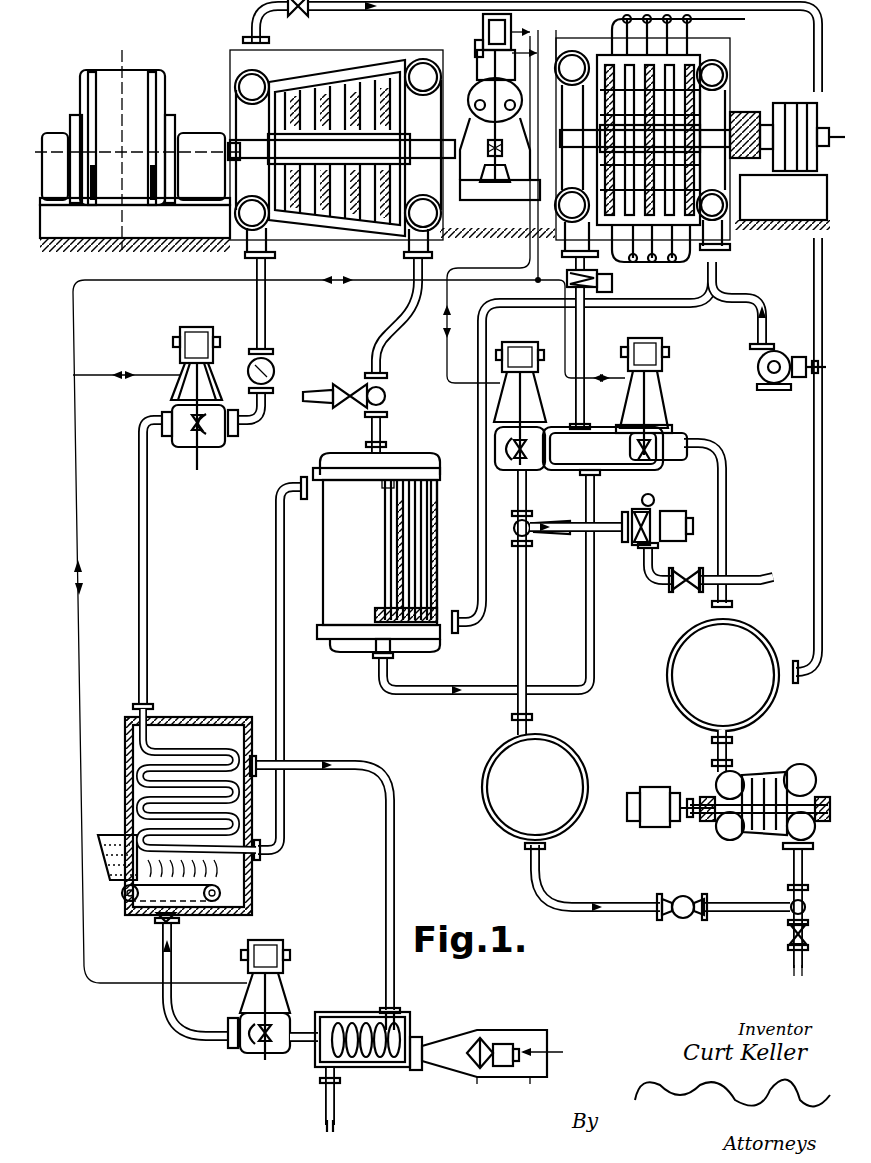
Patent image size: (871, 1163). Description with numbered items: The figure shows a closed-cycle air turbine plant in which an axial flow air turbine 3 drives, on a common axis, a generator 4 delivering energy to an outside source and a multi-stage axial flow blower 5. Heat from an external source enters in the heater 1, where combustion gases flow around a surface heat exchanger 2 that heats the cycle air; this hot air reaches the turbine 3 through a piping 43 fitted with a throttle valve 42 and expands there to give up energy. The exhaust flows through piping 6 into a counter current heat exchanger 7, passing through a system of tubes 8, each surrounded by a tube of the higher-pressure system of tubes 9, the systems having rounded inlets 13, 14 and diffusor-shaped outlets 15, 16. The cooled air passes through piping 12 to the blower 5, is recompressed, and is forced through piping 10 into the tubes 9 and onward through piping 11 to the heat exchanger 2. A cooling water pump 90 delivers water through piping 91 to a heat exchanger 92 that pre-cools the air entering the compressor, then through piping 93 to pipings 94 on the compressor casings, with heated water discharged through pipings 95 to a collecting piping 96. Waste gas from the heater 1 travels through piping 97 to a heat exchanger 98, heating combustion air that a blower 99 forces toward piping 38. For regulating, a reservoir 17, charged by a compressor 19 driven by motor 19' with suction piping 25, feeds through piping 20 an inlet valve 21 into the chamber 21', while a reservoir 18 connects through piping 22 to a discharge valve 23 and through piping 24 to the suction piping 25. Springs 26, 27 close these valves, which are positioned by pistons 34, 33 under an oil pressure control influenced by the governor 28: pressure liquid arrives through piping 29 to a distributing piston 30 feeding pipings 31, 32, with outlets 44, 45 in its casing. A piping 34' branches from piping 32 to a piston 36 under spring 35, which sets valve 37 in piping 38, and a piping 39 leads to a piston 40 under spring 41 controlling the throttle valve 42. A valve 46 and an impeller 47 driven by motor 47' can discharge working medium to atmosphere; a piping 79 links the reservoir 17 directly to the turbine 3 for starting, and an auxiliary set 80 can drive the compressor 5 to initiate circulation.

The heater 1 is at (133, 782).
The surface heat exchanger 2 is at (216, 748).
The multi-stage air turbine 3 is at (310, 65).
The generator 4 is at (126, 80).
The multi-stage axial flow blower 5 is at (620, 48).
The piping 6 is at (380, 358).
The heat exchanger 7 is at (336, 553).
The system of tubes 8 is at (408, 536).
The system of tubes 9 is at (398, 551).
The piping 10 is at (700, 300).
The piping 11 is at (280, 727).
The piping 12 is at (585, 360).
The inlet 13 is at (440, 462).
The inlet 14 is at (438, 610).
The outlet 15 is at (398, 636).
The outlet 16 is at (436, 496).
The reservoir 17 is at (763, 637).
The reservoir 18 is at (584, 767).
The compressor 19 is at (760, 795).
The motor 19' is at (671, 793).
The piping 20 is at (720, 498).
The inlet valve 21 is at (665, 428).
The chamber 21' is at (603, 448).
The piping 22 is at (527, 646).
The discharge valve 23 is at (513, 478).
The piping 24 is at (586, 906).
The suction piping 25 is at (806, 935).
The spring 26 is at (662, 358).
The spring 27 is at (528, 372).
The governor 28 is at (482, 86).
The piping 29 is at (482, 43).
The distributing piston 30 is at (556, 36).
The piping 31 is at (478, 264).
The piping 32 is at (562, 343).
The piston 33 is at (535, 383).
The piston 34 is at (659, 413).
The piping 34' is at (305, 629).
The spring 35 is at (281, 940).
The piston 36 is at (280, 965).
The valve 37 is at (265, 1055).
The piping 38 is at (180, 1036).
The piping 39 is at (118, 373).
The piston 40 is at (210, 362).
The spring 41 is at (215, 338).
The throttle valve 42 is at (197, 448).
The piping 43 is at (254, 283).
The outlet 44 is at (400, 12).
The outlet 45 is at (474, 50).
The valve 46 is at (684, 590).
The impeller 47 is at (594, 530).
The motor 47' is at (679, 511).
The piping 79 is at (406, 10).
The auxiliary set 80 is at (792, 106).
The cooling water pump 90 is at (778, 352).
The piping 91 is at (735, 285).
The heat exchanger 92 is at (598, 292).
The piping 93 is at (618, 277).
The pipings 94 is at (672, 252).
The pipings 95 is at (690, 48).
The collecting piping 96 is at (729, 20).
The piping 97 is at (391, 820).
The heat exchanger 98 is at (360, 1065).
The blower 99 is at (481, 1042).